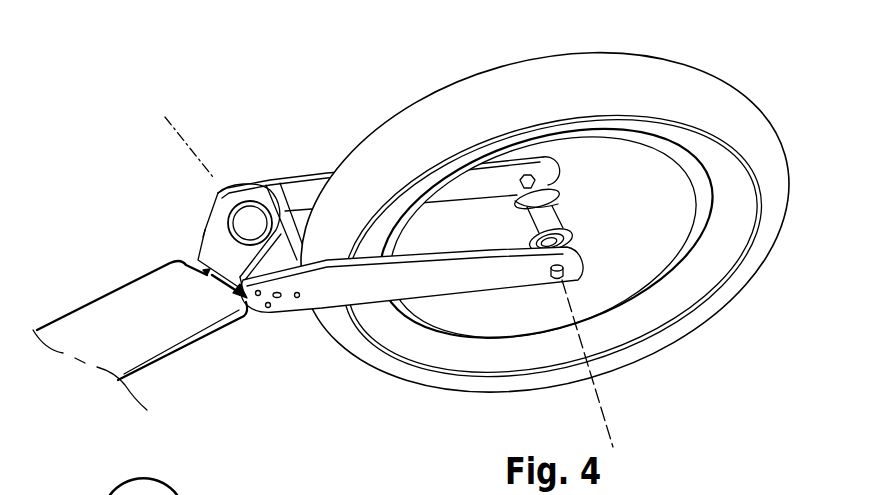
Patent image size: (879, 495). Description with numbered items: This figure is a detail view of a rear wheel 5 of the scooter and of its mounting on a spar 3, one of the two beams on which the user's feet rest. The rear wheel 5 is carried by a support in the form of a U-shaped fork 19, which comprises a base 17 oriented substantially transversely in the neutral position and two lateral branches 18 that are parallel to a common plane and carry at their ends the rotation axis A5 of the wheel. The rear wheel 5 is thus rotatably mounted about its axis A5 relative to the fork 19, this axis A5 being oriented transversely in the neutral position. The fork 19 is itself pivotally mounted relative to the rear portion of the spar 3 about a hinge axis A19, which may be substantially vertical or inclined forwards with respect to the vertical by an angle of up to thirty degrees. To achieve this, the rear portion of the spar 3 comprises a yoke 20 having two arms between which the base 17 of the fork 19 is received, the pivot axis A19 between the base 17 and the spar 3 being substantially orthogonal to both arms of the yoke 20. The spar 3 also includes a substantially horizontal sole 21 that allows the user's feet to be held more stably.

The spar 3 is at (186, 358).
The rear wheel 5 is at (706, 117).
The base 17 is at (249, 222).
The lateral branch 18 is at (305, 197).
The U-shaped fork 19 is at (487, 296).
The yoke 20 is at (206, 238).
The sole 21 is at (88, 337).
The hinge axis A19 is at (180, 133).
The rotation axis A5 is at (607, 417).